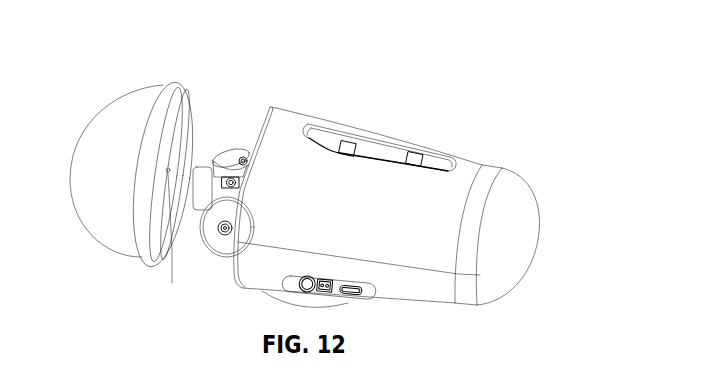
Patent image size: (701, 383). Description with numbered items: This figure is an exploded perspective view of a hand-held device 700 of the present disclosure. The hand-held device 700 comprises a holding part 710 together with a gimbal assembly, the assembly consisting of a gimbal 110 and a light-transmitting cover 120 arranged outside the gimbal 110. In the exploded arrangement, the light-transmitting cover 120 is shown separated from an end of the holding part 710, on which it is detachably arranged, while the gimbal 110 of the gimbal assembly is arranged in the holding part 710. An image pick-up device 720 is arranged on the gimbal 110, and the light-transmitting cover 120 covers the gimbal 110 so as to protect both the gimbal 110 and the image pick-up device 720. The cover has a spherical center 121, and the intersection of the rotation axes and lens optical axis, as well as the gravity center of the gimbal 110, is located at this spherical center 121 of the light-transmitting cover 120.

The hand-held device 700 is at (328, 53).
The holding part 710 is at (460, 170).
The image pick-up device 720 is at (202, 167).
The gimbal 110 is at (225, 157).
The light-transmitting cover 120 is at (127, 112).
The spherical center 121 is at (172, 283).